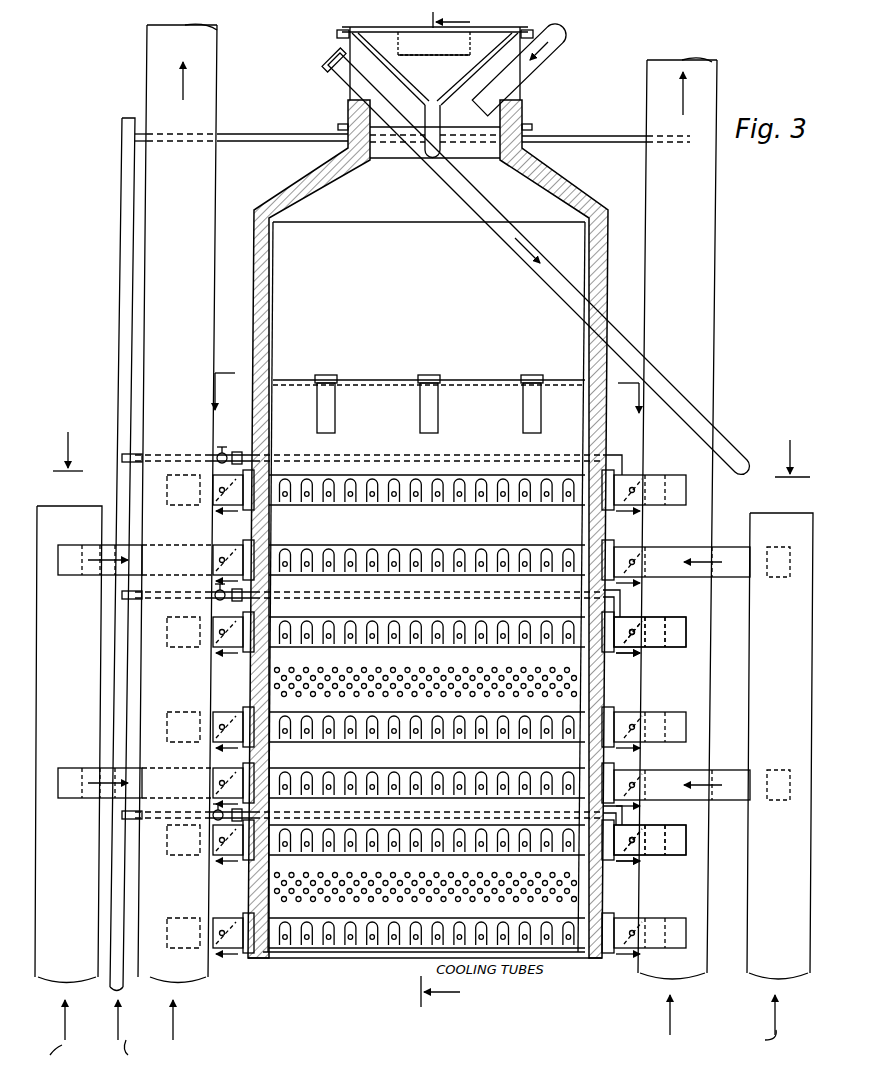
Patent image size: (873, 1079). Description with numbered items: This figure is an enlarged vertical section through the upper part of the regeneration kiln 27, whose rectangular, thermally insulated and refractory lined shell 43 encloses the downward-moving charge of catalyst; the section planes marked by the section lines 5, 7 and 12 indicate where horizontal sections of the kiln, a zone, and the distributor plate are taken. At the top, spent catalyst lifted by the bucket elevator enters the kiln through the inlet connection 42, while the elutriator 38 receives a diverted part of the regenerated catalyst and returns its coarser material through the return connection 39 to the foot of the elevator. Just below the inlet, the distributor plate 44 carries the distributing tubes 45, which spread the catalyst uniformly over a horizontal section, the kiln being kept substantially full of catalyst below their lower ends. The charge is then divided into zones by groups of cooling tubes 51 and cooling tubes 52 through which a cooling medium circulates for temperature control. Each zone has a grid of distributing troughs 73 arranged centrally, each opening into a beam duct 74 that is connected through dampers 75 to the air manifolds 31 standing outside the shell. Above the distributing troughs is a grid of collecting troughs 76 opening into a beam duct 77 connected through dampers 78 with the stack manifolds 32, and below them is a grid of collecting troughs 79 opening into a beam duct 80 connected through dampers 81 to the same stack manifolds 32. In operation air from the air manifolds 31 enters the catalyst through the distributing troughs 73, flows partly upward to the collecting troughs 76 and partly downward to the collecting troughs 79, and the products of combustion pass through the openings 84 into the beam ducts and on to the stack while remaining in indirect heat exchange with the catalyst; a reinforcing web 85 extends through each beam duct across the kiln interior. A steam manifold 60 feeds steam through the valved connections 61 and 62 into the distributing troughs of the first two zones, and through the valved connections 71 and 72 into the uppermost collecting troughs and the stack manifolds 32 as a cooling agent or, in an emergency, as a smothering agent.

The section line 5— 5 is at (454, 509).
The section line 7— 7 is at (426, 454).
The section line 12— 12 is at (427, 393).
The kiln 27 is at (290, 192).
The air manifolds 31 is at (56, 975).
The stack manifolds 32 is at (147, 60).
The elutriator 38 is at (421, 52).
The return connection 39 is at (737, 447).
The kiln inlet connection 42 is at (560, 68).
The kiln shell 43 is at (266, 292).
The distributor plate 44 is at (378, 378).
The distributing tubes 45 is at (440, 402).
The cooling tubes 51 is at (566, 690).
The cooling tubes 52 is at (562, 894).
The steam manifold 60 is at (122, 166).
The valved steam connection 61 is at (628, 594).
The valved steam connection 62 is at (626, 810).
The valved steam connection 71 is at (225, 452).
The valved steam connection 72 is at (258, 132).
The distributing troughs 73 is at (284, 552).
The beam duct 74 is at (512, 546).
The dampers 75 is at (224, 557).
The collecting troughs 76 is at (307, 480).
The beam duct 77 is at (650, 480).
The dampers 78 is at (631, 488).
The collecting troughs 79 is at (308, 632).
The beam duct 80 is at (470, 642).
The dampers 81 is at (223, 631).
The trough openings 84 is at (482, 494).
The reinforcing web 85 is at (583, 470).